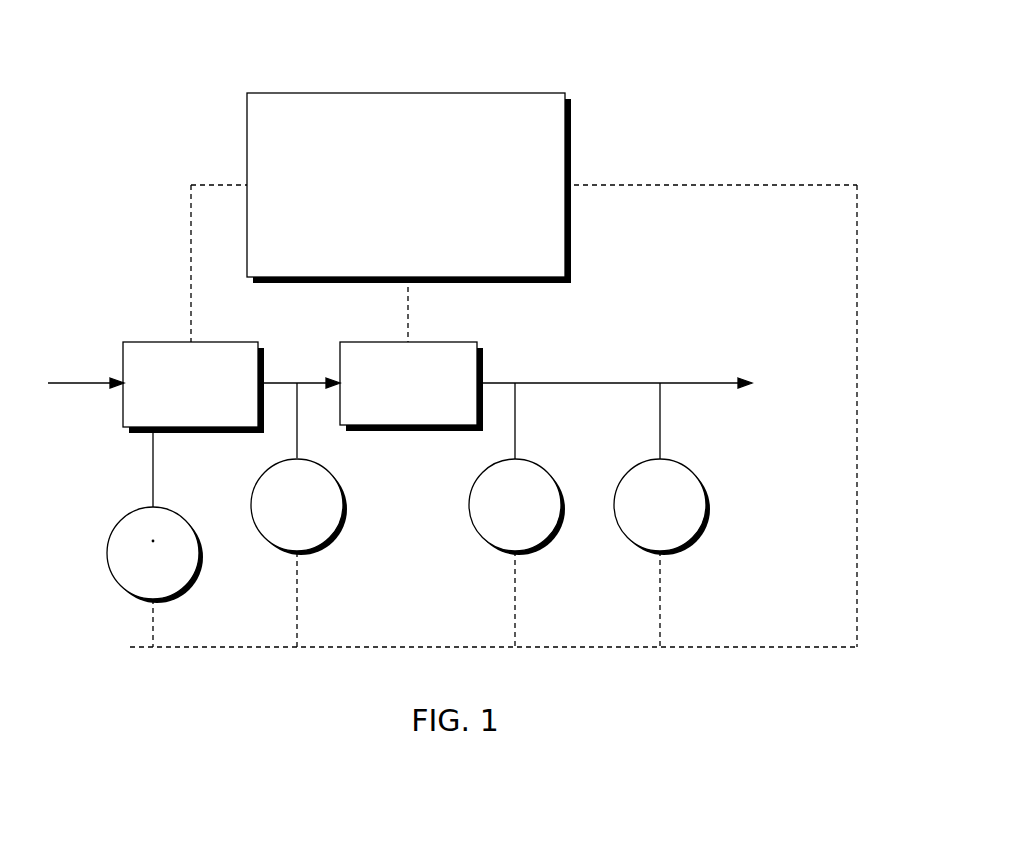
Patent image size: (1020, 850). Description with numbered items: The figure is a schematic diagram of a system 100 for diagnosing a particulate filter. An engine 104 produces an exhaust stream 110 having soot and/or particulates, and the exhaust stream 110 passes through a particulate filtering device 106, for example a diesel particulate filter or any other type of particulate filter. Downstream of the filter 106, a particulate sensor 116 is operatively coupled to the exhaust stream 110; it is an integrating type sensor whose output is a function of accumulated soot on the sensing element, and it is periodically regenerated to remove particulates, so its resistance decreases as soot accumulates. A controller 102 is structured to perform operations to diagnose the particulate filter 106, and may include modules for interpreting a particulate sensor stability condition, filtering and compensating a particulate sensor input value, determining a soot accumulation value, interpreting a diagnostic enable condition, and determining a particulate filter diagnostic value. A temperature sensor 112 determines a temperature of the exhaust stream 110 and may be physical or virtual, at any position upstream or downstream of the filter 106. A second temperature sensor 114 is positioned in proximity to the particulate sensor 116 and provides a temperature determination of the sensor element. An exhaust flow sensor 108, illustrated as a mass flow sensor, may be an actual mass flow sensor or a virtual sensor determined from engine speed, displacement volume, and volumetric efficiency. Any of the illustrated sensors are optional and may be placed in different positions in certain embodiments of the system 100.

The system 100 is at (778, 51).
The controller 102 is at (388, 197).
The engine 104 is at (171, 397).
The particulate filtering device 106 is at (389, 397).
The exhaust flow sensor 108 is at (108, 552).
The exhaust stream 110 is at (284, 382).
The temperature sensor 112 is at (251, 504).
The temperature sensor 114 is at (469, 504).
The particulate sensor 116 is at (641, 517).